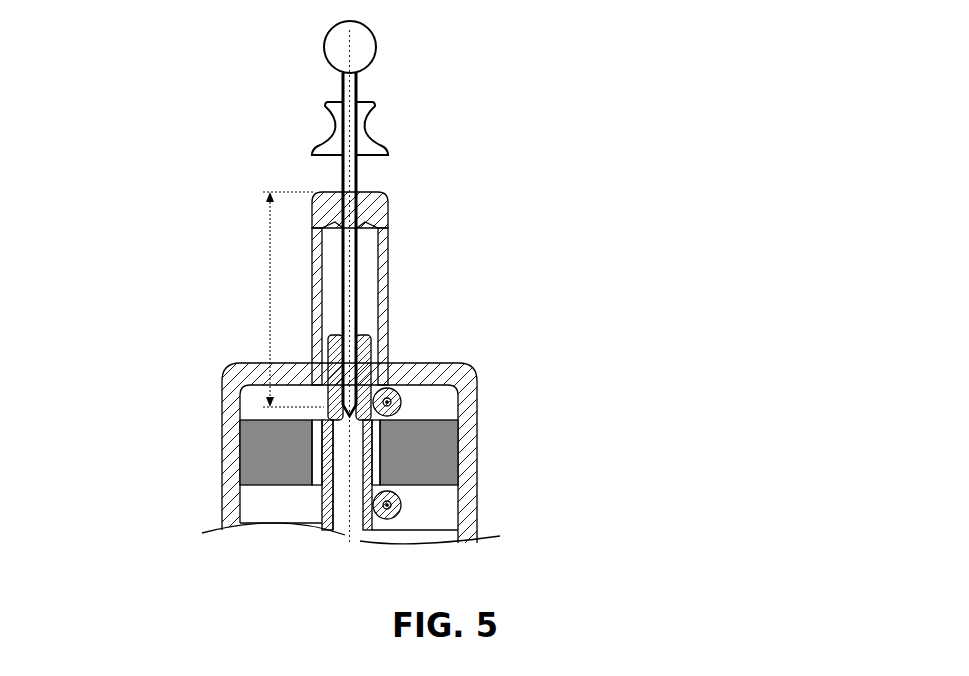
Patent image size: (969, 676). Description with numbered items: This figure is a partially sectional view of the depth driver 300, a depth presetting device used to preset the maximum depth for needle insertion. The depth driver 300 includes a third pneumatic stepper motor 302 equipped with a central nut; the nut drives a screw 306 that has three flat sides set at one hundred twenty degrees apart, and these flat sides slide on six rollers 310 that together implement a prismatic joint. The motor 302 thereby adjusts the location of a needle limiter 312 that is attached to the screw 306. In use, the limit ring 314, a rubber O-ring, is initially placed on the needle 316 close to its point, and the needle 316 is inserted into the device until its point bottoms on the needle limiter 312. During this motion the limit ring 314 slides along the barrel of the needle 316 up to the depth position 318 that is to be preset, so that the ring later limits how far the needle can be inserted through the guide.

The depth driver 300 is at (205, 148).
The third pneumatic stepper motor 302 is at (423, 440).
The screw 306 is at (335, 531).
The rollers 310 is at (400, 503).
The needle limiter 312 is at (385, 337).
The limit ring 314 is at (363, 187).
The needle 316 is at (362, 140).
The depth position 318 is at (248, 299).